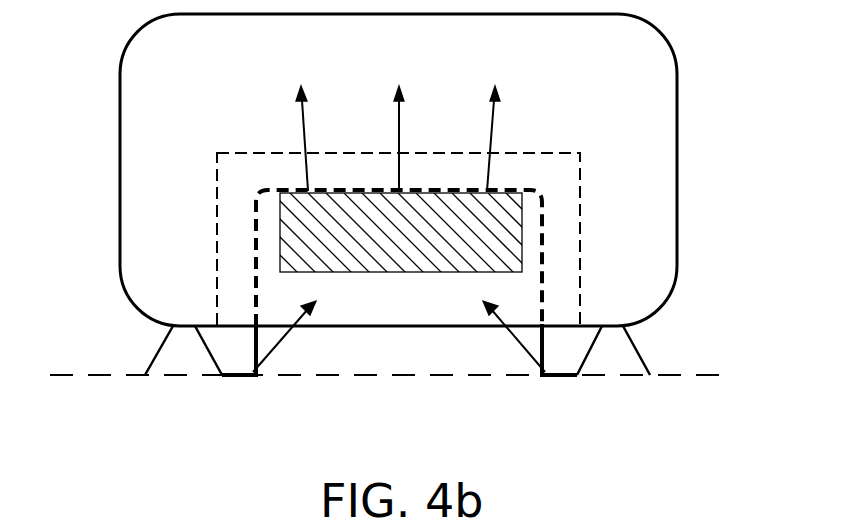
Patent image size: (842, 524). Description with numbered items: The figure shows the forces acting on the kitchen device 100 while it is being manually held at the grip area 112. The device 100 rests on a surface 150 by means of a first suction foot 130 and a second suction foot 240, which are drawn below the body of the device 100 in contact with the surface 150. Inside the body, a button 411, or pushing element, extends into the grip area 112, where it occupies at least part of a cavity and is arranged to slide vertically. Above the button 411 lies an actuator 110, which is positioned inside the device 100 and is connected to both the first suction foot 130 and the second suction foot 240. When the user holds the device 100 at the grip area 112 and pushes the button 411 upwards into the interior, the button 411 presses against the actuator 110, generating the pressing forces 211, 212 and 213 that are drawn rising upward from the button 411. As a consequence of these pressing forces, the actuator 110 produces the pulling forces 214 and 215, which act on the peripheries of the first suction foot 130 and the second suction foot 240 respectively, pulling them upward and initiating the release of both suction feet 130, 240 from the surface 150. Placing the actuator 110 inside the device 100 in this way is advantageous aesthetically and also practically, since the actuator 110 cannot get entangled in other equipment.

The kitchen device 100 is at (677, 100).
The actuator 110 is at (256, 212).
The grip area 112 is at (580, 268).
The first suction foot 130 is at (183, 377).
The surface 150 is at (62, 375).
The pressing force 211 is at (303, 120).
The pressing force 212 is at (489, 122).
The pressing force 213 is at (400, 122).
The pulling force 214 is at (273, 348).
The pulling force 215 is at (522, 352).
The second suction foot 240 is at (612, 377).
The button 411 is at (522, 238).